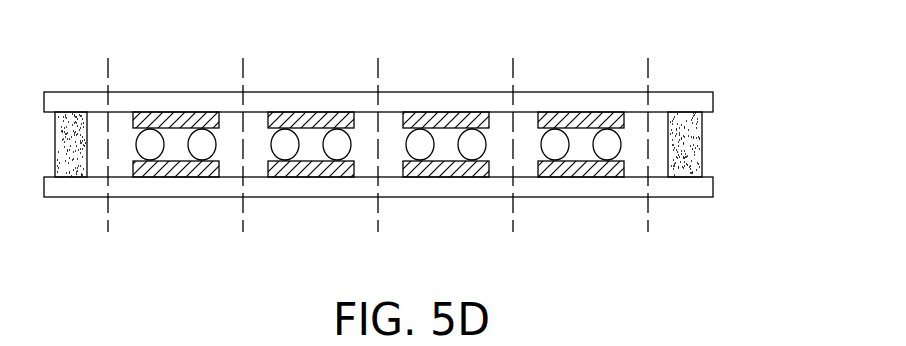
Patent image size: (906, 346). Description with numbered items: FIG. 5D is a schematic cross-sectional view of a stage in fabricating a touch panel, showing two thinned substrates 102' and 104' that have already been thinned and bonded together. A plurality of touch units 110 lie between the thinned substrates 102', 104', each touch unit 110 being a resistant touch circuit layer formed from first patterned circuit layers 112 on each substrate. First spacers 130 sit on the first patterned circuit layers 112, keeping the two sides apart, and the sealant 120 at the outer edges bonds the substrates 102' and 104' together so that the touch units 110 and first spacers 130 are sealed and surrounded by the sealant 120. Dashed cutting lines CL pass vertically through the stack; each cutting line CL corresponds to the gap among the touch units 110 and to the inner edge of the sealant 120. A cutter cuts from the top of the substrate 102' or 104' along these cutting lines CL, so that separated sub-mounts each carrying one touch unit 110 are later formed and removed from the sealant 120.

The thinned substrate 102' is at (421, 181).
The thinned substrate 104' is at (421, 97).
The touch unit 110 is at (578, 113).
The first patterned circuit layer 112 is at (378, 144).
The sealant 120 is at (690, 128).
The first spacer 130 is at (610, 147).
The cutting line CL is at (658, 62).